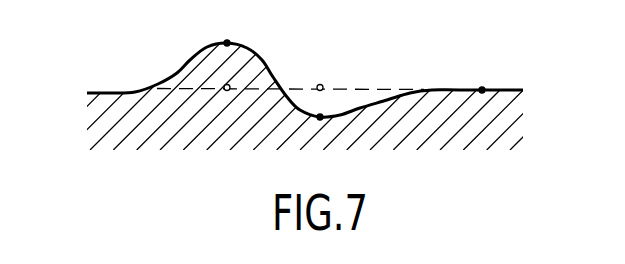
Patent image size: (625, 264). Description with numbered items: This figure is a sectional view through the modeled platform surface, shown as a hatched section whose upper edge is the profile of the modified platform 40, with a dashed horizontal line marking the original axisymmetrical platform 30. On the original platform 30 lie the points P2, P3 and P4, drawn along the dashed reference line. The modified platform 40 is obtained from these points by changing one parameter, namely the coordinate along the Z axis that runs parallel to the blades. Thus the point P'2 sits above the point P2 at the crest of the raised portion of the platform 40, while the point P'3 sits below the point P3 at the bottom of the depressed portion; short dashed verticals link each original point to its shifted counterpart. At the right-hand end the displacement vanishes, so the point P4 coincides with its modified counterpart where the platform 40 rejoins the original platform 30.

The platform 40 is at (177, 75).
The original axisymmetrical platform 30 is at (393, 84).
The point P'2 is at (230, 53).
The point P2 is at (228, 99).
The point P3 is at (325, 76).
The point P'3 is at (324, 117).
The point P4 is at (486, 80).